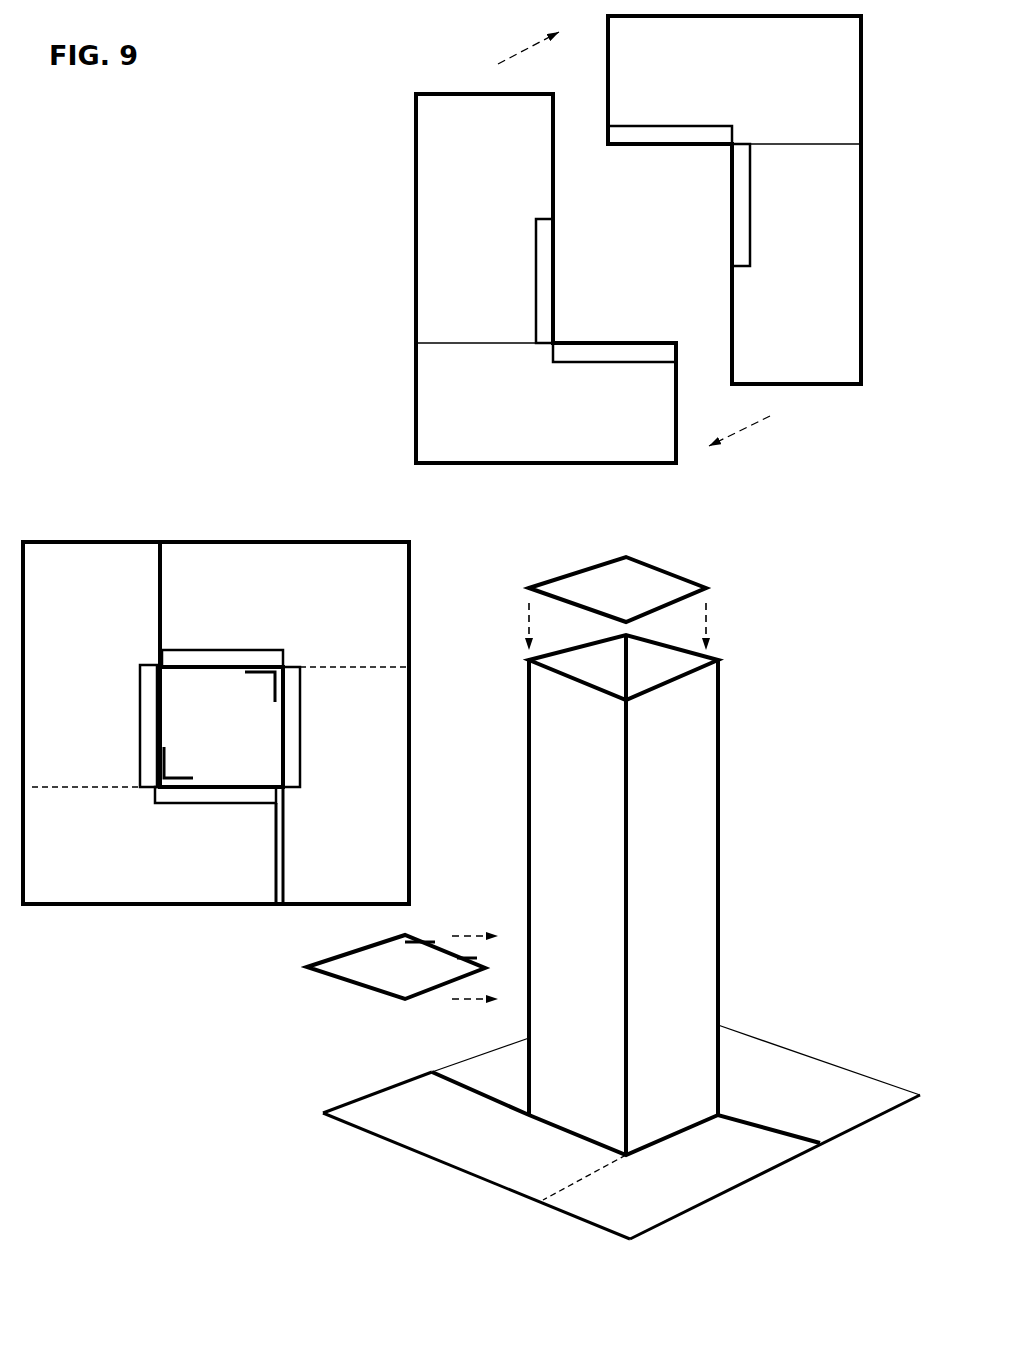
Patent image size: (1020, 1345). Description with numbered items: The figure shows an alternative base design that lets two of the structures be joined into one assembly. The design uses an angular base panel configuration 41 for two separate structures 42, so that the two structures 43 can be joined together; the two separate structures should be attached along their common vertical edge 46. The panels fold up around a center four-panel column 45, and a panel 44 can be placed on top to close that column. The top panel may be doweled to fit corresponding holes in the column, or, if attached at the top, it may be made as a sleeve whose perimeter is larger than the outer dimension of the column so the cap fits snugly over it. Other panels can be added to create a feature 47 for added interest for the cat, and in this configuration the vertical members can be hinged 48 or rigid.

The angular base panel configuration 41 is at (480, 132).
The separate structures 42 is at (640, 115).
The two structures 43 is at (150, 660).
The panel 44 is at (617, 578).
The center four-panel column 45 is at (668, 740).
The common vertical edge 46 is at (519, 720).
The feature 47 is at (347, 982).
The hinged 48 is at (192, 772).